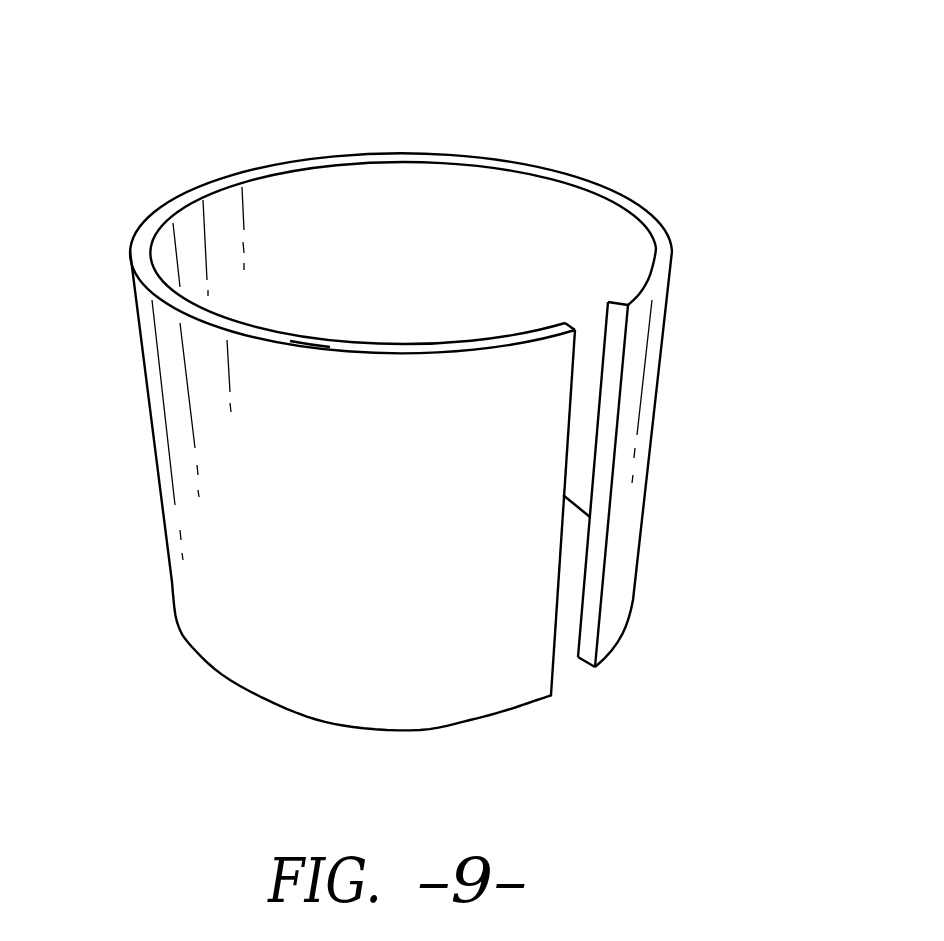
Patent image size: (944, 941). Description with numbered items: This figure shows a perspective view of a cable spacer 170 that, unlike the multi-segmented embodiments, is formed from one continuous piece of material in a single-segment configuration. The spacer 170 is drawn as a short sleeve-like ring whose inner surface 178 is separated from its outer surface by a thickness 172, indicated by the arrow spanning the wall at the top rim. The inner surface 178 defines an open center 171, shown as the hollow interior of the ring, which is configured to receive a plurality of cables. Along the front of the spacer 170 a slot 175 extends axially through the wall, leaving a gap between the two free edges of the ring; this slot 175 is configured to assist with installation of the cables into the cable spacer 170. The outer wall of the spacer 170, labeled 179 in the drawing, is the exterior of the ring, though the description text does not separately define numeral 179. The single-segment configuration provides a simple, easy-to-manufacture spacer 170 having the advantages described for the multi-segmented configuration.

The cable spacer 170 is at (164, 107).
The open center 171 is at (420, 247).
The thickness 172 is at (260, 393).
The slot 175 is at (565, 632).
The inner surface 178 is at (513, 212).
The outer surface 179 is at (197, 515).